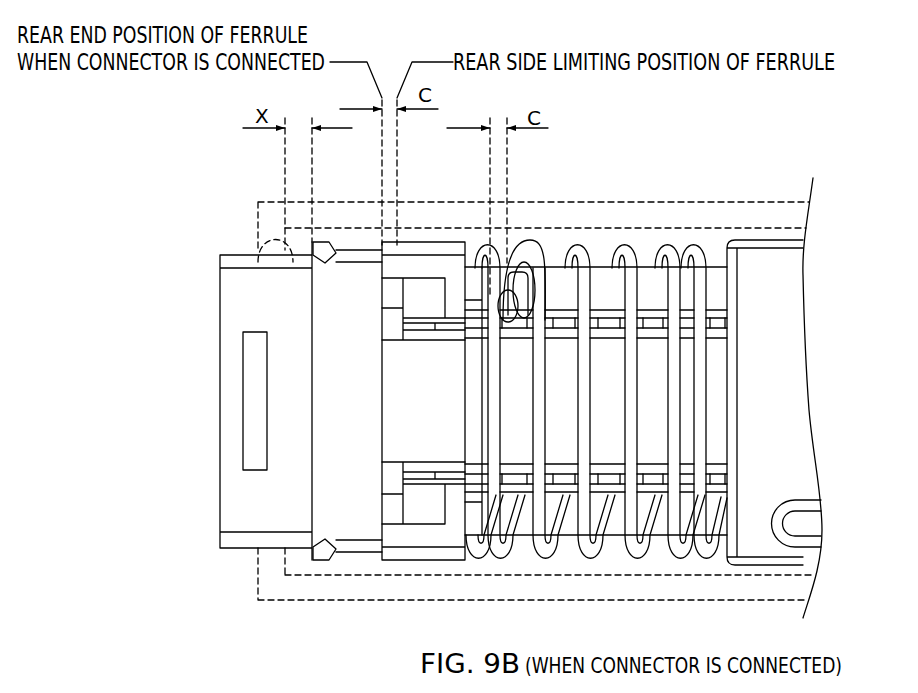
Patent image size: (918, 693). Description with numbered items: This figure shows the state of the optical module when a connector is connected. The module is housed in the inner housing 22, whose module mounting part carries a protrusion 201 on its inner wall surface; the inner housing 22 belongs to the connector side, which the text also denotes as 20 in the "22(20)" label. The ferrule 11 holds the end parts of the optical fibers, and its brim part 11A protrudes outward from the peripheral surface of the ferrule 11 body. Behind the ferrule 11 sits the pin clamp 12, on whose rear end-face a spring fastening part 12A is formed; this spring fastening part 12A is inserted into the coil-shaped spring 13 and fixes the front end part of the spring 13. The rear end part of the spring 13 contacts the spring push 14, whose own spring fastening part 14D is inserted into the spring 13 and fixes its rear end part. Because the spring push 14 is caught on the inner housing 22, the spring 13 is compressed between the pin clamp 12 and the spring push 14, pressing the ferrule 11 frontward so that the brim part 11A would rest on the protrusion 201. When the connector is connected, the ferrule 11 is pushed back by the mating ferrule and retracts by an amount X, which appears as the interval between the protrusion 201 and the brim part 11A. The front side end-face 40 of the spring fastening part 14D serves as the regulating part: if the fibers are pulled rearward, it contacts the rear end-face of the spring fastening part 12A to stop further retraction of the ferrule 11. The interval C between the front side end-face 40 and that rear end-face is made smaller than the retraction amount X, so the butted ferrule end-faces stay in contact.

The mating connector 20 is at (471, 388).
The inner housing 22 is at (257, 232).
The protrusion 201 is at (250, 253).
The ferrule 11 is at (228, 300).
The brim part 11A is at (322, 242).
The pin clamp 12 is at (413, 247).
The spring fastening part 12A is at (468, 247).
The spring 13 is at (577, 257).
The spring push 14 is at (643, 357).
The spring fastening part 14D is at (642, 257).
The front side end-face 40 is at (531, 245).